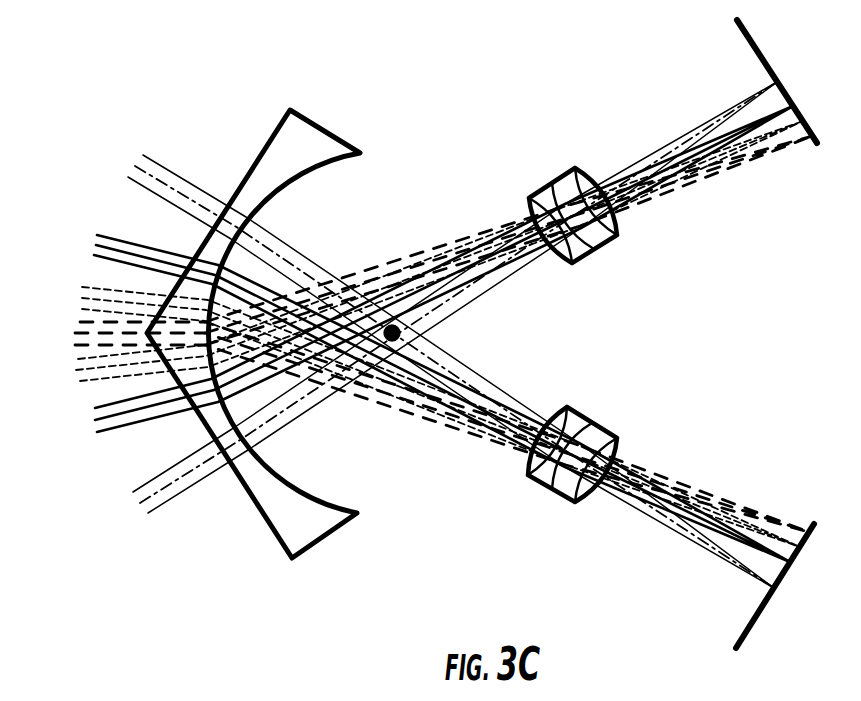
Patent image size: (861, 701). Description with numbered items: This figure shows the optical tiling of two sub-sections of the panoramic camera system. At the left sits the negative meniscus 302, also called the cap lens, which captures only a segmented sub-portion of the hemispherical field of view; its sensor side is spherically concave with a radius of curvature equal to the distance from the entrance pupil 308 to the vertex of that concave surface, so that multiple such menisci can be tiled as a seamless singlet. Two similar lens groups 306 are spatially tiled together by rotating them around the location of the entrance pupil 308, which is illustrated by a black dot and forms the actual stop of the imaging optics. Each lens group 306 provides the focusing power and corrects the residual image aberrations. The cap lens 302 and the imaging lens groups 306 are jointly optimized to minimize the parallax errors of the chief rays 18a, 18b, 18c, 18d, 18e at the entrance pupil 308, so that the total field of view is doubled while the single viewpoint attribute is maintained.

The chief ray 18a is at (168, 172).
The chief ray 18b is at (113, 236).
The chief ray 18c is at (93, 285).
The chief ray 18d is at (80, 322).
The light beam 18e is at (90, 361).
The negative meniscus 302 is at (326, 536).
The lens group 306 is at (512, 197).
The entrance pupil 308 is at (389, 341).